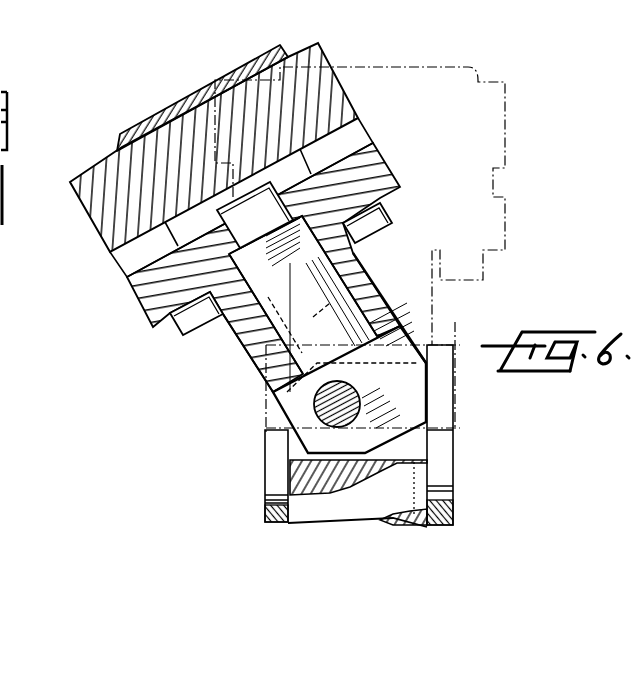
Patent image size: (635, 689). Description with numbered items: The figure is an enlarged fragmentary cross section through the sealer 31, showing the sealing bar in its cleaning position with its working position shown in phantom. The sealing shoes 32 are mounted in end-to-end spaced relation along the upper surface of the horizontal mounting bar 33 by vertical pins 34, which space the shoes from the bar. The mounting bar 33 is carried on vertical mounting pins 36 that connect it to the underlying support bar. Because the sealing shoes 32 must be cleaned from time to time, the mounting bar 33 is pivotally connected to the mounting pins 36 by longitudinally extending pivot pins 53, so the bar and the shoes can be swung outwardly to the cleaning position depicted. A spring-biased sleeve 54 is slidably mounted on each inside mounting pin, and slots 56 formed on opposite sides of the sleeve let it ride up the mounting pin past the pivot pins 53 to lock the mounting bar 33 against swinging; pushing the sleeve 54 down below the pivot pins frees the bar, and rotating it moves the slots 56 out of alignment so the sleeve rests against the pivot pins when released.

The sealer 31 is at (180, 355).
The sealing shoes 32 is at (170, 112).
The mounting bar 33 is at (398, 175).
The vertical pins 34 is at (368, 130).
The mounting pins 36 is at (413, 490).
The pivot pins 53 is at (316, 403).
The sleeve 54 is at (442, 345).
The slots 56 is at (358, 368).